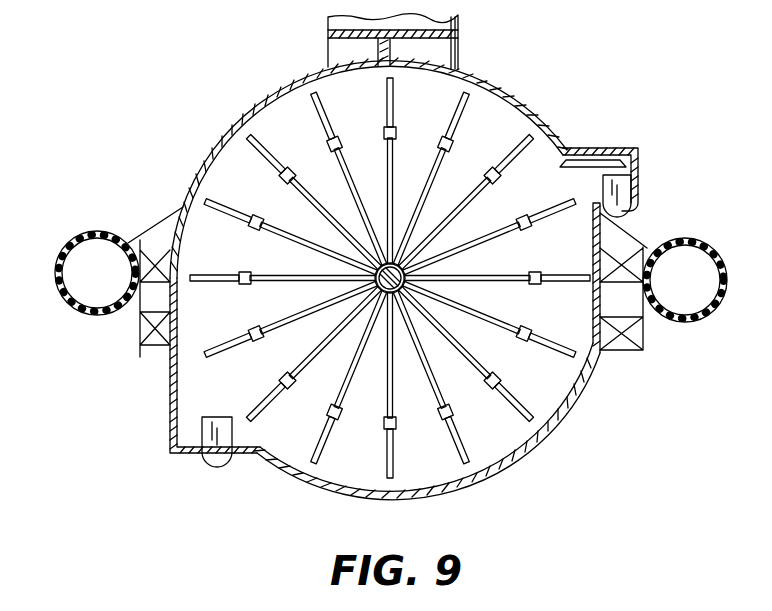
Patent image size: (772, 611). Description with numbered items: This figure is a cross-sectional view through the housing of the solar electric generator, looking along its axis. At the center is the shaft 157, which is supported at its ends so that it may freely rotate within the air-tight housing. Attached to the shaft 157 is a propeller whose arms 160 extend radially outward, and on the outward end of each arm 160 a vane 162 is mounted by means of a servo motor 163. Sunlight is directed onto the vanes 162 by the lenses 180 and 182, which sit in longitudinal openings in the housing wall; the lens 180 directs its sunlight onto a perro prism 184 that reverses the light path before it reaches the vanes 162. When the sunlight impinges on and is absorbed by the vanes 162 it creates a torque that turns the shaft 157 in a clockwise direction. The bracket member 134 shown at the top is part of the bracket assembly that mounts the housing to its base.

The bracket member 134 is at (458, 51).
The shaft 157 is at (376, 273).
The arms 160 is at (392, 160).
The vane 162 is at (437, 92).
The servo motor 163 is at (343, 136).
The lens 180 is at (635, 190).
The lens 182 is at (205, 468).
The perro prism 184 is at (614, 150).